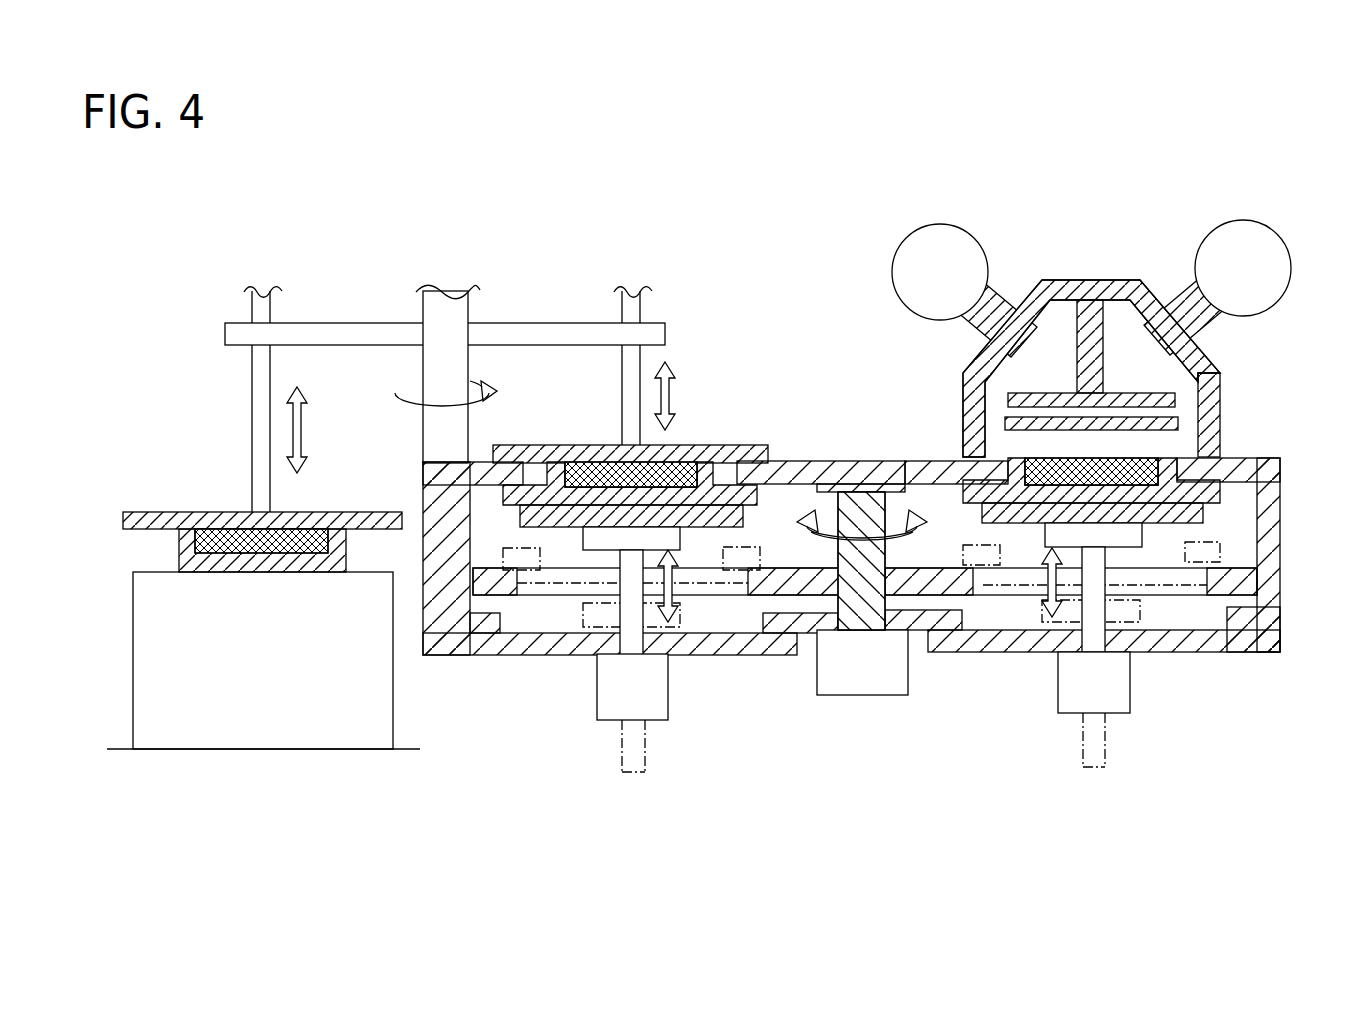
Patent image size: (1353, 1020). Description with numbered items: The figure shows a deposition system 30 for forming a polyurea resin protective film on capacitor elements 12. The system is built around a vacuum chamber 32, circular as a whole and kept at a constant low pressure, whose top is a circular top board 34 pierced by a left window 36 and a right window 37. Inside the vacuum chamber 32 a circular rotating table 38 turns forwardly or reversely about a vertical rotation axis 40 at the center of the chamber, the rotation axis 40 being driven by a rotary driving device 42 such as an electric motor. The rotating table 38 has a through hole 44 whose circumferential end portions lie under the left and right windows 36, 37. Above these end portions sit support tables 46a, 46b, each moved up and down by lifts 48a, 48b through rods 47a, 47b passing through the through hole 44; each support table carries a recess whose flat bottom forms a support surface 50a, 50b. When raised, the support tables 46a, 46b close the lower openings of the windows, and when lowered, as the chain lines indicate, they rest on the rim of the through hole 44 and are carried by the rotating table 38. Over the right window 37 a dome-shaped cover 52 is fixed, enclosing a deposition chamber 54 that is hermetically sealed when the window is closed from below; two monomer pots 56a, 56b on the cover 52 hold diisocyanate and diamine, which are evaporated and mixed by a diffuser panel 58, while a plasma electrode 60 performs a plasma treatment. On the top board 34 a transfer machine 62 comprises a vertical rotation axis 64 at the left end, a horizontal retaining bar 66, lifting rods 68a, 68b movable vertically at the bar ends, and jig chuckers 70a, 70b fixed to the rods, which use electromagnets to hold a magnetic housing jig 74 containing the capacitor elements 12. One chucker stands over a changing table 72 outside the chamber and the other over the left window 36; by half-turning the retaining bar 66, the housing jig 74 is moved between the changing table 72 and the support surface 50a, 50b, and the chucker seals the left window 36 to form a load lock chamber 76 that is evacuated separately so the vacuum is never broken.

The capacitor element 12 is at (205, 528).
The deposition system 30 is at (705, 461).
The vacuum chamber 32 is at (1184, 655).
The top board 34 is at (925, 473).
The left window 36 is at (535, 465).
The right window 37 is at (1193, 465).
The rotating table 38 is at (800, 583).
The rotation axis 40 is at (865, 508).
The rotary driving device 42 is at (862, 682).
The through hole 44 is at (538, 600).
The support table 46a is at (750, 518).
The support table 46b is at (1210, 512).
The rod 47a is at (650, 620).
The rod 47b is at (1085, 617).
The lift 48a is at (613, 697).
The lift 48b is at (1112, 688).
The support surface 50a is at (567, 505).
The support surface 50b is at (1125, 505).
The cover 52 is at (1053, 293).
The deposition chamber 54 is at (1060, 381).
The monomer pot 56a is at (950, 245).
The monomer pot 56b is at (1232, 245).
The diffuser panel 58 is at (1003, 422).
The plasma electrode 60 is at (1213, 380).
The transfer machine 62 is at (436, 361).
The rotation axis 64 is at (440, 438).
The retaining bar 66 is at (540, 330).
The lifting rod 68a is at (262, 397).
The lifting rod 68b is at (628, 365).
The jig chucker 70a is at (167, 522).
The jig chucker 70b is at (718, 452).
The changing table 72 is at (278, 722).
The housing jig 74 is at (183, 548).
The load lock chamber 76 is at (745, 470).